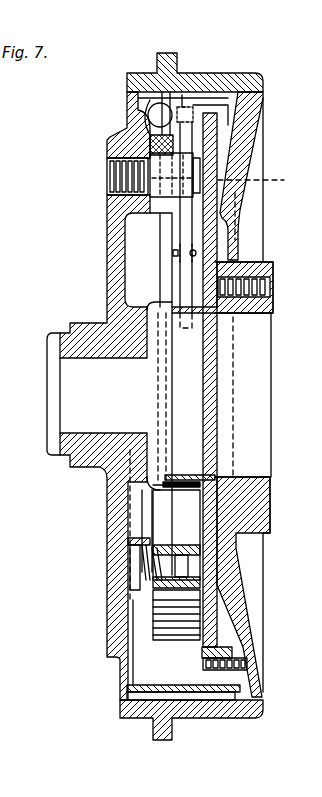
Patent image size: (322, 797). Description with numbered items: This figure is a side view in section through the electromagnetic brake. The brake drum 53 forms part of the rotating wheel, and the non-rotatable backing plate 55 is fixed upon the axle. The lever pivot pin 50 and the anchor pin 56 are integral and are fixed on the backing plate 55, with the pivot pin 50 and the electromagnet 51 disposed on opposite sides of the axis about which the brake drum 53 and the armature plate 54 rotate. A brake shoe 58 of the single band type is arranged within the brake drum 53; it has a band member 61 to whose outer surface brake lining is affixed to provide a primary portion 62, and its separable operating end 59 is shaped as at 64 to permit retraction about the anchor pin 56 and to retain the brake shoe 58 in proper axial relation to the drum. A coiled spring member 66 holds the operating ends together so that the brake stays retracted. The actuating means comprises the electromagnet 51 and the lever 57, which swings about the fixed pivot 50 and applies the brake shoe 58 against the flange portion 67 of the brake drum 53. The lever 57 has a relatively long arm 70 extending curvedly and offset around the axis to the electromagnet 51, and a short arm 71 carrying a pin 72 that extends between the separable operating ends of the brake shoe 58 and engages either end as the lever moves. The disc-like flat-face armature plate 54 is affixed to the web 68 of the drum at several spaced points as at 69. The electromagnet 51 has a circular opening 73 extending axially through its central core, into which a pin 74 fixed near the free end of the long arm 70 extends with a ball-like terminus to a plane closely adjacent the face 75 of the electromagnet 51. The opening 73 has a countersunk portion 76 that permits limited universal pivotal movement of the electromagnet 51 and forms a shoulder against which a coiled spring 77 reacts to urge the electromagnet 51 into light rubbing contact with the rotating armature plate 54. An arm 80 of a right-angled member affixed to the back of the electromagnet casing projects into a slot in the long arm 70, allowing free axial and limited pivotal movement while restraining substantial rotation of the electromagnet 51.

The lever pivot pin 50 is at (160, 158).
The electromagnet 51 is at (150, 618).
The brake drum 53 is at (181, 75).
The armature plate 54 is at (217, 142).
The backing plate 55 is at (118, 230).
The anchor pin 56 is at (110, 178).
The lever 57 is at (152, 244).
The brake shoe 58 is at (186, 98).
The separable operating end 59 is at (246, 88).
The band member 61 is at (128, 689).
The primary lining portion 62 is at (128, 697).
The shaped portion of operating end 64 is at (261, 181).
The coiled spring member 66 is at (188, 253).
The flange portion 67 is at (205, 718).
The web 68 is at (242, 636).
The attachment points 69 is at (247, 666).
The long arm 70 is at (136, 523).
The short arm 71 is at (160, 95).
The pin 72 is at (190, 135).
The circular opening 73 is at (195, 565).
The pin 74 is at (181, 555).
The face of electromagnet 75 is at (205, 598).
The countersunk portion 76 is at (135, 592).
The coiled spring 77 is at (146, 565).
The arm 80 is at (128, 541).